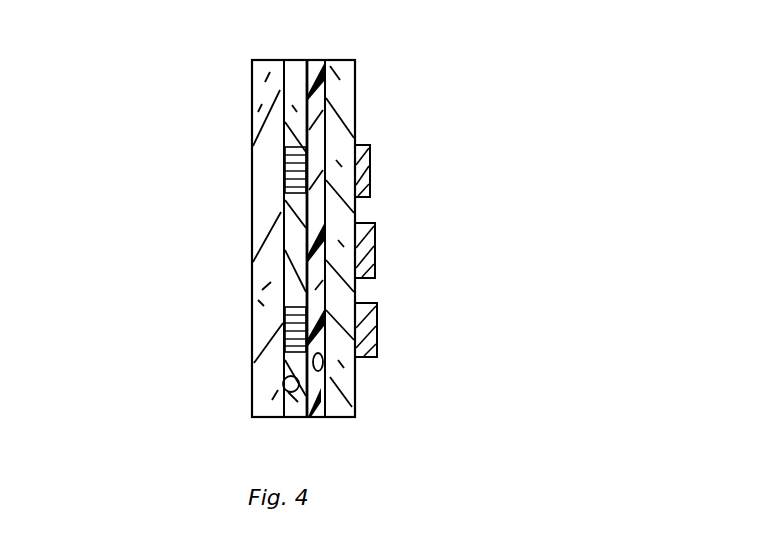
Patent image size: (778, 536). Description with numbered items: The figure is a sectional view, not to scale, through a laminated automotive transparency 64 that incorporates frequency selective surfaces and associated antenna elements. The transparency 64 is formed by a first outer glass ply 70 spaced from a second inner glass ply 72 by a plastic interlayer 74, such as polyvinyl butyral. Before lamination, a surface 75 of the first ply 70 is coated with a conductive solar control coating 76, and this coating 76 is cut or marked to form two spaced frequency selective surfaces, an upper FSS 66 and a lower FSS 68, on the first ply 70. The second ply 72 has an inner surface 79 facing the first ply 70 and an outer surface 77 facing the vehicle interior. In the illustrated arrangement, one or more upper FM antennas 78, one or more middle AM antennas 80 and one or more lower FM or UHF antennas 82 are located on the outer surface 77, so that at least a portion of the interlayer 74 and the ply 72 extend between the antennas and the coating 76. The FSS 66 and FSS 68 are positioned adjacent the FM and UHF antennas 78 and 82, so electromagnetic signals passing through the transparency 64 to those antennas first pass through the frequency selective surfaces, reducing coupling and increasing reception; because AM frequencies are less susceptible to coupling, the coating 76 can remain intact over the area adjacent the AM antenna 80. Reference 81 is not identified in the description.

The laminated automotive transparency 64 is at (116, 93).
The upper frequency selective surface 66 is at (272, 182).
The lower frequency selective surface 68 is at (285, 312).
The first outer glass ply 70 is at (258, 110).
The second inner glass ply 72 is at (345, 117).
The plastic interlayer 74 is at (317, 417).
The surface of the first ply 75 is at (300, 216).
The solar control coating 76 is at (300, 216).
The outer surface of the second ply 77 is at (358, 397).
The upper FM antenna 78 is at (370, 160).
The inner surface of the second ply 79 is at (315, 375).
The middle AM antenna 80 is at (375, 249).
The void 81 is at (290, 370).
The lower FM or UHF antenna 82 is at (377, 330).